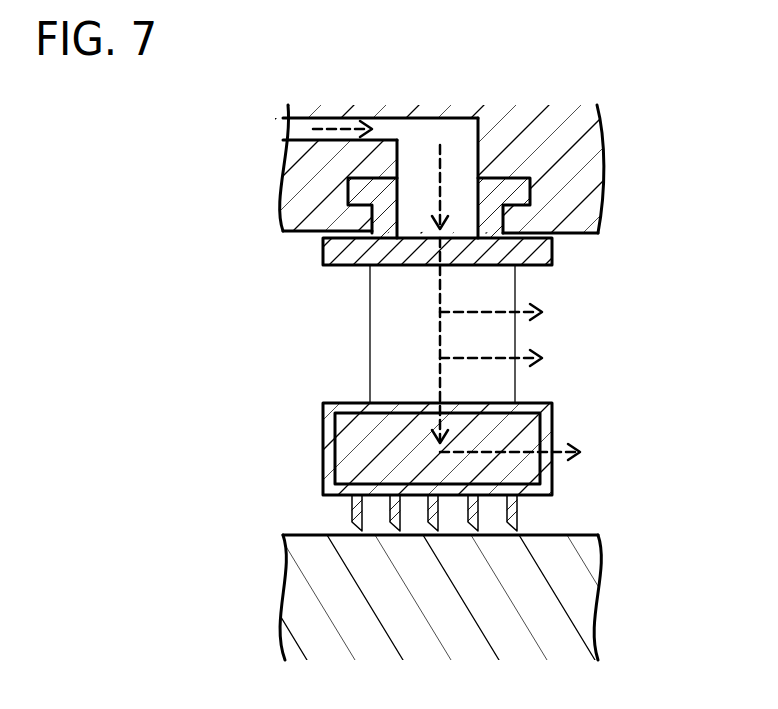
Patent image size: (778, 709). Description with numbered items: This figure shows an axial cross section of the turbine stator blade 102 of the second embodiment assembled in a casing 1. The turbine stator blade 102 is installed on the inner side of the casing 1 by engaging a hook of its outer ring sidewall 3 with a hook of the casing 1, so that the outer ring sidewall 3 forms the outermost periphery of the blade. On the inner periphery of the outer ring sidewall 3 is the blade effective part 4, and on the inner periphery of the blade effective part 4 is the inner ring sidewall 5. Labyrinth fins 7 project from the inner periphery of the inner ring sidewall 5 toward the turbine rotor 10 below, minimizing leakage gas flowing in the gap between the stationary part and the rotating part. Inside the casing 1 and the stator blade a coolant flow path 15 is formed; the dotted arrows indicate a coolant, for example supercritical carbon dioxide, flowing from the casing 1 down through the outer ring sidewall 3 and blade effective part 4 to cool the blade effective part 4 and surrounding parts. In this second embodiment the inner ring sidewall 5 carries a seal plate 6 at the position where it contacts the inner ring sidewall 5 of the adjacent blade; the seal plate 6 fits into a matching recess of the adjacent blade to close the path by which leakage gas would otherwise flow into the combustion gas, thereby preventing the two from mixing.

The casing 1 is at (291, 198).
The coolant flow path 15 is at (300, 128).
The outer ring sidewall 3 is at (323, 253).
The blade effective part 4 is at (390, 330).
The inner ring sidewall 5 is at (330, 454).
The seal plate 6 is at (348, 430).
The labyrinth fins 7 is at (352, 517).
The turbine rotor 10 is at (290, 617).
The turbine stator blade 102 is at (275, 238).